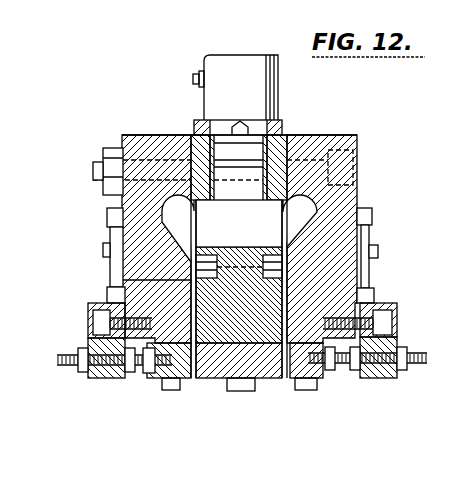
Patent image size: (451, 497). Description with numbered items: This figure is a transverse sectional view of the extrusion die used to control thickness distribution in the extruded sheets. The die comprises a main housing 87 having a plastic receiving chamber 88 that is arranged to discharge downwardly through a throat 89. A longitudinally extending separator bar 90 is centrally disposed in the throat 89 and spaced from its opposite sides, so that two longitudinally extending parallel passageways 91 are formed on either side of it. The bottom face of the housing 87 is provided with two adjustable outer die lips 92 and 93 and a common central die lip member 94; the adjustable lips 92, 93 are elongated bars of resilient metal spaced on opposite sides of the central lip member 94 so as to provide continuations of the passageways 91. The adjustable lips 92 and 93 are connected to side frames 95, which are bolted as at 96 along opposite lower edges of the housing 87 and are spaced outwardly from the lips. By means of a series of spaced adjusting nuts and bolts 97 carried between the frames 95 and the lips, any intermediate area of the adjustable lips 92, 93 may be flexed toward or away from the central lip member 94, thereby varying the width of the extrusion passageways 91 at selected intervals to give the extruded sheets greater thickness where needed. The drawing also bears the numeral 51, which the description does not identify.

The valve body 51 is at (365, 197).
The main housing 87 is at (335, 247).
The plastic receiving chamber 88 is at (194, 221).
The throat 89 is at (191, 279).
The separator bar 90 is at (243, 252).
The passageways 91 is at (287, 293).
The adjustable outer die lip 92 is at (191, 378).
The adjustable outer die lip 93 is at (320, 379).
The central die lip member 94 is at (258, 367).
The side frames 95 is at (100, 378).
The bolts 96 is at (97, 323).
The adjusting nuts and bolts 97 is at (66, 364).